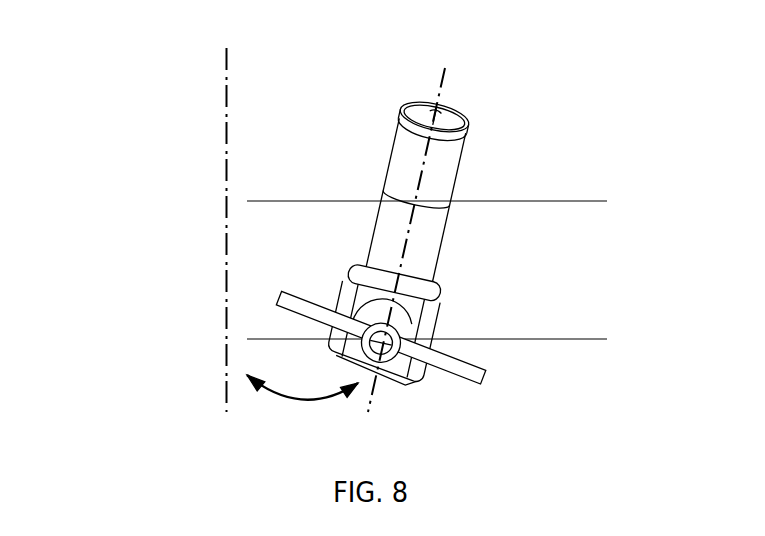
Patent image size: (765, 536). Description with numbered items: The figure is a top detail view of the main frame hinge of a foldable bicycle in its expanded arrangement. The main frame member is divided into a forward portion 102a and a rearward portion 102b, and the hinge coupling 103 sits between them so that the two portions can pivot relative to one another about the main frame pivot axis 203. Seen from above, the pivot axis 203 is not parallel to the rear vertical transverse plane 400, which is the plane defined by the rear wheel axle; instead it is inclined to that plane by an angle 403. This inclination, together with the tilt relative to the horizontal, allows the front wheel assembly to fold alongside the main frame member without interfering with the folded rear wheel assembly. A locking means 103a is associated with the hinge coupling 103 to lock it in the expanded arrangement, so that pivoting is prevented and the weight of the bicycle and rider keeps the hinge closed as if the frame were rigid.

The hinge coupling 103 is at (383, 147).
The locking means 103a is at (489, 373).
The main frame pivot axis 203 is at (437, 83).
The rear vertical transverse plane 400 is at (222, 312).
The forward portion of main frame member 102a is at (528, 200).
The rearward portion of main frame member 102b is at (317, 201).
The angle 403 is at (297, 405).